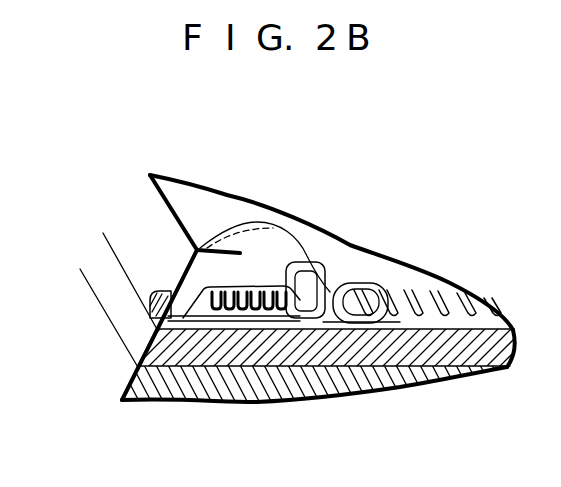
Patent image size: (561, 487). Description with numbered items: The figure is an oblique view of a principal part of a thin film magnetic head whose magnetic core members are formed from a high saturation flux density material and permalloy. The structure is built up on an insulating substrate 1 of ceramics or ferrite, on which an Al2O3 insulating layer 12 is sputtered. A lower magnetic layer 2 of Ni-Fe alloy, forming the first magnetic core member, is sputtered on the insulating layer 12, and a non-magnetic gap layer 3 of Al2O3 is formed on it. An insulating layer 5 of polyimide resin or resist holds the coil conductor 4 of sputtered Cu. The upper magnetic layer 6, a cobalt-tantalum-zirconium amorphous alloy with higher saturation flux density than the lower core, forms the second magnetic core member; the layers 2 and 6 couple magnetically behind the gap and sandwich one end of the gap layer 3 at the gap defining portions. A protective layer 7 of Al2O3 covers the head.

The insulating substrate 1 is at (277, 387).
The magnetic layer 2 is at (152, 352).
The gap layer 3 is at (156, 305).
The coil conductor 4 is at (240, 292).
The insulating layer 5 is at (180, 283).
The magnetic layer 6 is at (302, 263).
The protective layer 7 is at (166, 210).
The Al2O3 layer 12 is at (201, 357).